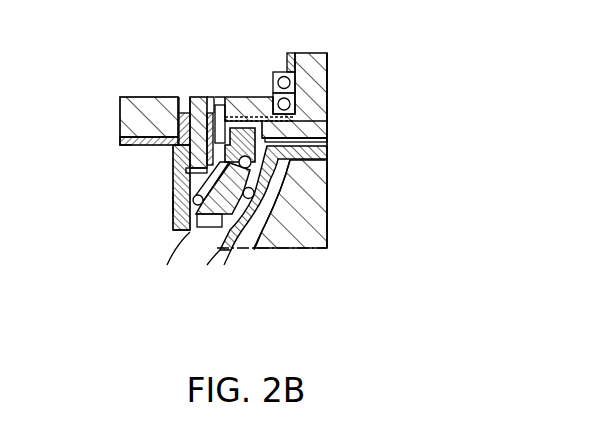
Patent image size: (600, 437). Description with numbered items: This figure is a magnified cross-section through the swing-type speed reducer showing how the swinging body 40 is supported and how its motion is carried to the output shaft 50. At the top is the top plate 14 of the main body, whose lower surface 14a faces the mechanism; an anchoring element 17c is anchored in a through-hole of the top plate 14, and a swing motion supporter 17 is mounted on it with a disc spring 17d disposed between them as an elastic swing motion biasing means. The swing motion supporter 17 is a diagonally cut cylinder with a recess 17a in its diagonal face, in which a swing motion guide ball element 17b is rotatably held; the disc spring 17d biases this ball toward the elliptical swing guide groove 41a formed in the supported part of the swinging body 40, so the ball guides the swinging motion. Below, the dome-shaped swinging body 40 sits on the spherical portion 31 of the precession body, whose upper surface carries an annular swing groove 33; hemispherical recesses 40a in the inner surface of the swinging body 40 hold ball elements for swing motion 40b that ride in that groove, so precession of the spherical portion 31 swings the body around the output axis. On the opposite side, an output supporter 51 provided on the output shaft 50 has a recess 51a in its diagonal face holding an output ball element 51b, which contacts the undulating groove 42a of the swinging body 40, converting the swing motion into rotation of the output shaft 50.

The top plate 14 is at (146, 97).
The lower surface of flange 14a is at (120, 146).
The swing motion supporter 17 is at (173, 183).
The recess 17a is at (173, 200).
The swing motion guide ball element 17b is at (186, 223).
The anchoring element 17c is at (199, 98).
The disc spring 17d is at (183, 112).
The spherical portion 31 is at (327, 220).
The annular swing groove 33 is at (285, 243).
The swinging body 40 is at (323, 152).
The recess 40a is at (217, 250).
The ball element for swing motion 40b is at (348, 195).
The swing guide groove 41a is at (188, 236).
The undulating groove 42a is at (297, 175).
The output shaft 50 is at (330, 97).
The output supporter 51 is at (242, 128).
The recess 51a is at (262, 134).
The output ball element 51b is at (272, 145).